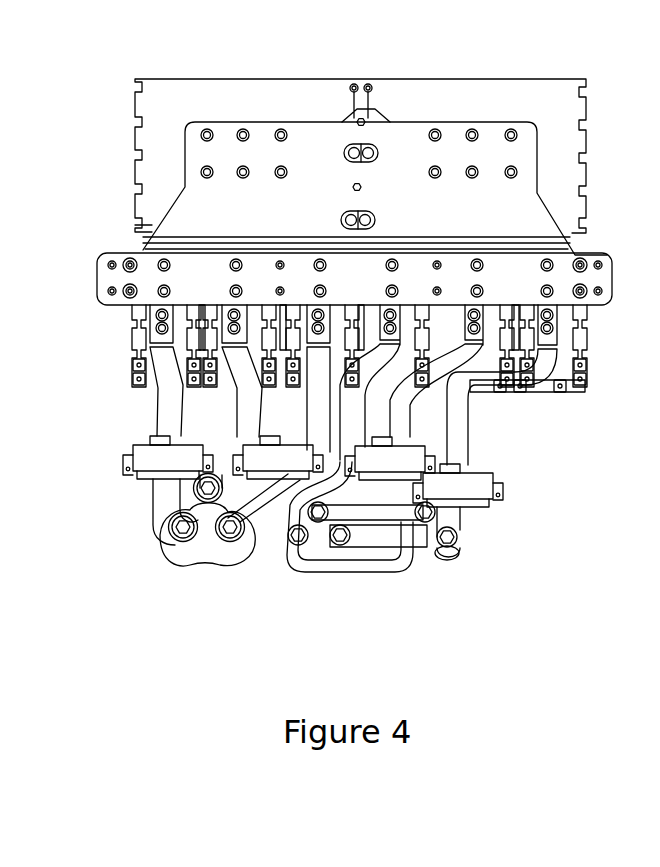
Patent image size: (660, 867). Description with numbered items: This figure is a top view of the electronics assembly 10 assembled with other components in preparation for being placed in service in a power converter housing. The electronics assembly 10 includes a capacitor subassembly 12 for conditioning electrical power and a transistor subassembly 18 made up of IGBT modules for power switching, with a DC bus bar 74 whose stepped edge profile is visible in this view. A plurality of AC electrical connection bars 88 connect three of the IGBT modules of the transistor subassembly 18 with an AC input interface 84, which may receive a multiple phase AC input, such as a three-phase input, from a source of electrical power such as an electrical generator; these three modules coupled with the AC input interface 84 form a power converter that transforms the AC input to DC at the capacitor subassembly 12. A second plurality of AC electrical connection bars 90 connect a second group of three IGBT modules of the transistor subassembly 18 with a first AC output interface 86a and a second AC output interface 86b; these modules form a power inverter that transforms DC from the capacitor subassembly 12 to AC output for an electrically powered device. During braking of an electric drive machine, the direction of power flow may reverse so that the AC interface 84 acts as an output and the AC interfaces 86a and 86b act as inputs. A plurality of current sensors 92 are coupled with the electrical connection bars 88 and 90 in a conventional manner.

The electronics assembly 10 is at (84, 96).
The capacitor subassembly 12 is at (118, 178).
The transistor subassembly 18 is at (110, 382).
The DC bus bar 74 is at (522, 203).
The AC input interface 84 is at (180, 572).
The first AC output interface 86a is at (314, 580).
The second AC output interface 86b is at (428, 570).
The AC electrical connection bars 88 is at (172, 406).
The AC electrical connection bars 90 is at (343, 417).
The current sensors 92 is at (148, 453).